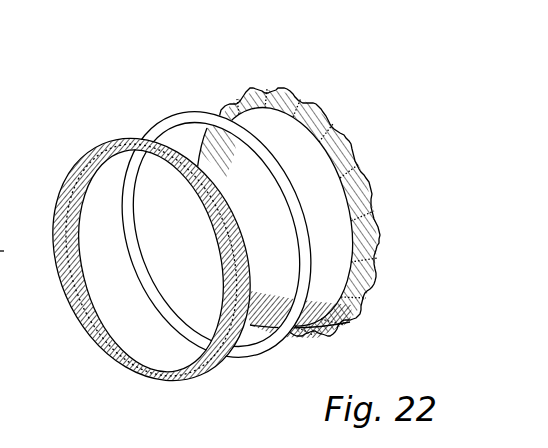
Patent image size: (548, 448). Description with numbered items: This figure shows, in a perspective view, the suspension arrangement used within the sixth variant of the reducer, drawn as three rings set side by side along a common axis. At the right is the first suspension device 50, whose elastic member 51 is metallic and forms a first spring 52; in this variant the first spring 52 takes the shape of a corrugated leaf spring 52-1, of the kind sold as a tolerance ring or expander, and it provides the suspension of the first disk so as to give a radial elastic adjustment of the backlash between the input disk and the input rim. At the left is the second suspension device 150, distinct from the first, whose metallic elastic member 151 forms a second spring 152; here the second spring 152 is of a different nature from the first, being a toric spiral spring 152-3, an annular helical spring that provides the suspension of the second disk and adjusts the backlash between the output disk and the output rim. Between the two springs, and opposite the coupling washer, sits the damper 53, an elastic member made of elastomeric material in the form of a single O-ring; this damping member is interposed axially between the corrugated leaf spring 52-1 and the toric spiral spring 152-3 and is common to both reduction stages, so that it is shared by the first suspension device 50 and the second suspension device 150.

The first suspension device 50 is at (362, 117).
The first spring 52 is at (293, 91).
The elastic member 51 is at (274, 224).
The corrugated leaf spring 52-1 is at (356, 185).
The damper 53 is at (180, 118).
The second suspension device 150 is at (75, 67).
The second spring 152 is at (88, 148).
The elastic member 151 is at (274, 224).
The toric spiral spring 152-3 is at (132, 373).